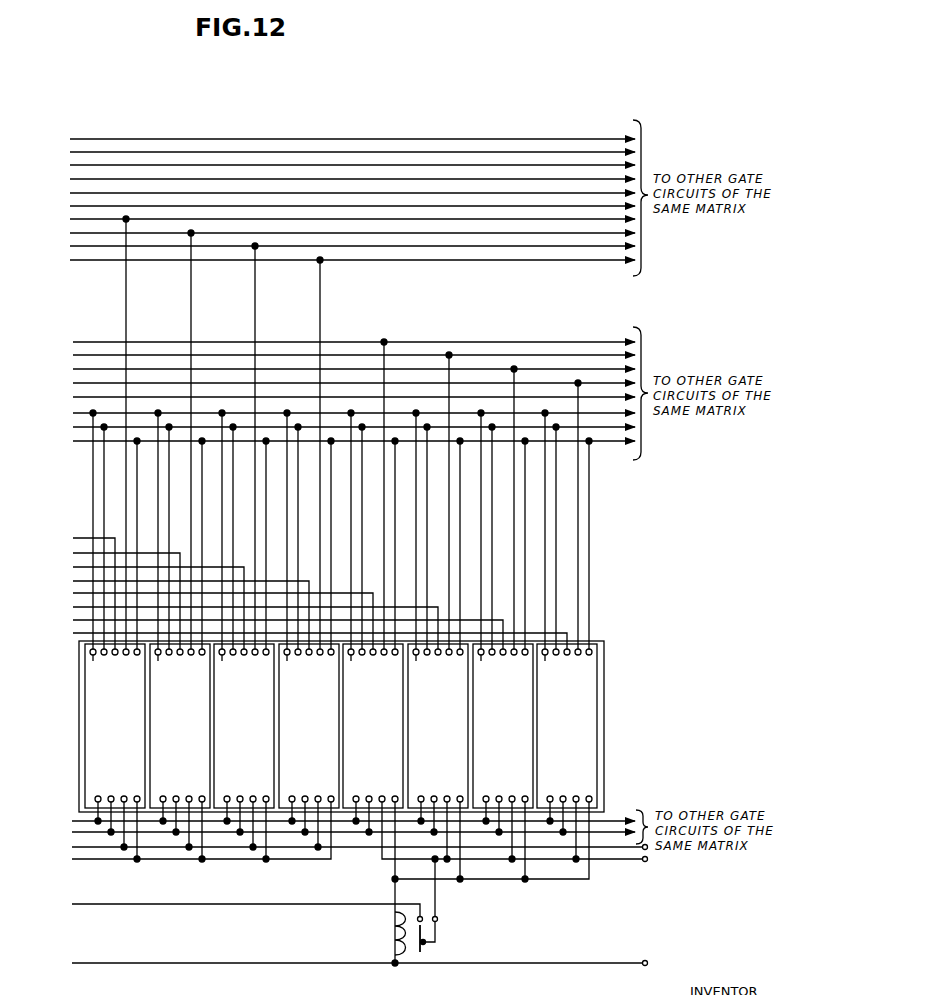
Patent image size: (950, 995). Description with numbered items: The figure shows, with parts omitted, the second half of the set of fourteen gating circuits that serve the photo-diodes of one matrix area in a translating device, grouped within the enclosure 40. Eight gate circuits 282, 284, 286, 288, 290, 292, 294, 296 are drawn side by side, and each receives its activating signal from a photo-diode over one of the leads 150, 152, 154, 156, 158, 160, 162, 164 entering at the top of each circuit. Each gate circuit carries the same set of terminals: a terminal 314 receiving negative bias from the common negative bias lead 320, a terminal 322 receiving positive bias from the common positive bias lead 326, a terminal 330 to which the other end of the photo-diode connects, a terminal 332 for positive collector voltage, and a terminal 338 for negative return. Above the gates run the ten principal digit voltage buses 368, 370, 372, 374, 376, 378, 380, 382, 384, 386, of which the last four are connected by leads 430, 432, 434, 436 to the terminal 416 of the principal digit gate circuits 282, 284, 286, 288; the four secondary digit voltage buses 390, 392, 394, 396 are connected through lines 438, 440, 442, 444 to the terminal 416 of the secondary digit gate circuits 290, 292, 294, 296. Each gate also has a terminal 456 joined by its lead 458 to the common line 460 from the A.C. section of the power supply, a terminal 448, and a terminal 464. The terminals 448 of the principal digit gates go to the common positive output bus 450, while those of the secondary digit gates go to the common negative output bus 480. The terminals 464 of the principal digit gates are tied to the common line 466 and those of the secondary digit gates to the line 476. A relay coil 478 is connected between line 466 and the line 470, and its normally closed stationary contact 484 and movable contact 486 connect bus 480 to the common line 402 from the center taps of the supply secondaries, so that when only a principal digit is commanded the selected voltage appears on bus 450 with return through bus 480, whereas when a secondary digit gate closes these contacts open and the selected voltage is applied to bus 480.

The gate circuit matrix 40 is at (655, 720).
The lead 150 is at (73, 538).
The lead 152 is at (73, 553).
The lead 154 is at (73, 567).
The lead 156 is at (73, 581).
The lead 158 is at (73, 593).
The lead 160 is at (73, 607).
The lead 162 is at (73, 620).
The lead 164 is at (73, 633).
The gate circuit 282 is at (124, 723).
The gate circuit 284 is at (189, 723).
The gate circuit 286 is at (253, 723).
The gate circuit 288 is at (318, 723).
The secondary digit gate circuit 290 is at (382, 723).
The secondary digit gate circuit 292 is at (447, 723).
The secondary digit gate circuit 294 is at (512, 723).
The secondary digit gate circuit 296 is at (576, 723).
The terminal 314 is at (324, 662).
The common negative bias lead 320 is at (73, 413).
The terminal 322 is at (573, 681).
The common positive bias lead 326 is at (73, 427).
The terminal 330 is at (560, 677).
The terminal 332 is at (563, 772).
The terminal 338 is at (95, 797).
The principal digit voltage bus 368 is at (97, 139).
The principal digit voltage bus 370 is at (140, 152).
The principal digit voltage bus 372 is at (179, 164).
The principal digit voltage bus 374 is at (223, 179).
The principal digit voltage bus 376 is at (273, 193).
The principal digit voltage bus 378 is at (292, 207).
The principal digit voltage bus 380 is at (375, 219).
The principal digit voltage bus 382 is at (413, 233).
The principal digit voltage bus 384 is at (463, 246).
The principal digit voltage bus 386 is at (523, 260).
The secondary digit voltage bus 390 is at (103, 333).
The secondary digit voltage bus 392 is at (73, 355).
The secondary digit voltage bus 394 is at (73, 369).
The secondary digit voltage bus 396 is at (73, 383).
The common line 402 is at (73, 397).
The terminal 416 is at (585, 687).
The lead 430 is at (126, 281).
The lead 432 is at (191, 302).
The lead 434 is at (255, 318).
The lead 436 is at (320, 318).
The line 438 is at (387, 343).
The line 440 is at (452, 357).
The line 442 is at (517, 371).
The line 444 is at (581, 385).
The terminal 448 is at (576, 789).
The common positive output bus 450 is at (88, 848).
The terminal 456 is at (616, 653).
The lead 458 is at (263, 477).
The common line 460 is at (73, 441).
The terminal 464 is at (614, 781).
The common line 466 is at (112, 860).
The line 470 is at (213, 963).
The line 476 is at (490, 881).
The relay coil 478 is at (392, 931).
The common negative output bus 480 is at (621, 860).
The stationary contact 484 is at (427, 943).
The movable contact 486 is at (418, 940).